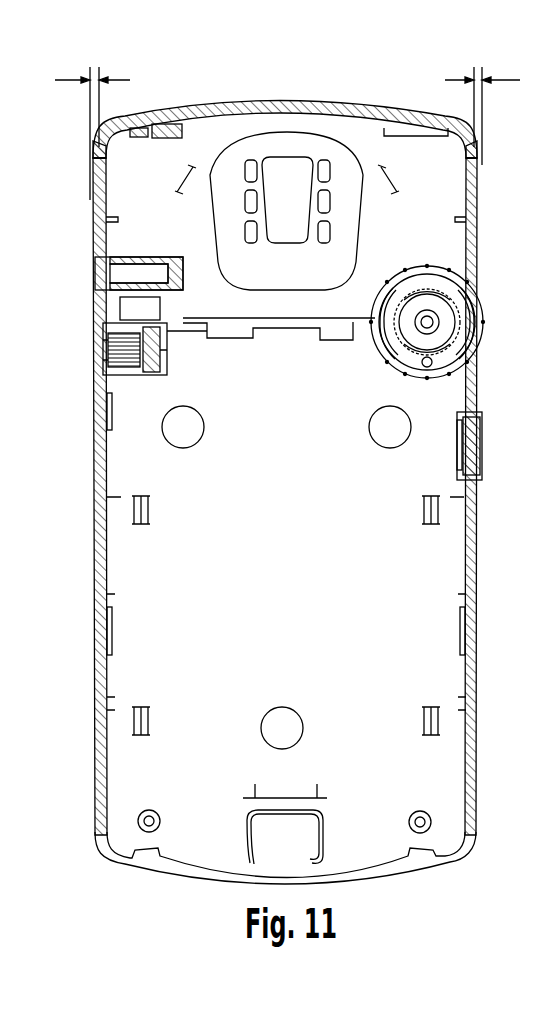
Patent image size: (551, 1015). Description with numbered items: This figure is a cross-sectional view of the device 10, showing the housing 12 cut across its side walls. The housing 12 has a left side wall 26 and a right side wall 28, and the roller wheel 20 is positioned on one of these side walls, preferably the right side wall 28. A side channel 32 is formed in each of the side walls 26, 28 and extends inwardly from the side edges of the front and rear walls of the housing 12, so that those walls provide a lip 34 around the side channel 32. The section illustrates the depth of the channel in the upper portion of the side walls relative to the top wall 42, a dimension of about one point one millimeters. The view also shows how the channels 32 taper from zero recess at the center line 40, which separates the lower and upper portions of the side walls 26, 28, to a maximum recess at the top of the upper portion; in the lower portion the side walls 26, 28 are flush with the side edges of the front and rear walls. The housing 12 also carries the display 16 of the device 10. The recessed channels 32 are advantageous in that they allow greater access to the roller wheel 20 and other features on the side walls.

The device 10 is at (303, 442).
The housing 12 is at (285, 104).
The display 16 is at (550, 40).
The roller wheel 20 is at (472, 346).
The left side wall 26 is at (90, 569).
The right side wall 28 is at (481, 636).
The side channel 32 is at (94, 222).
The lip 34 is at (92, 148).
The center line 40 is at (470, 497).
The top wall 42 is at (258, 101).